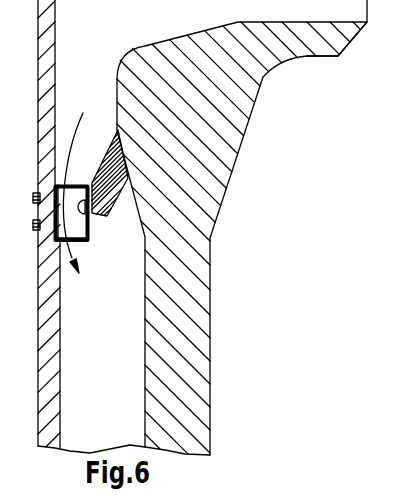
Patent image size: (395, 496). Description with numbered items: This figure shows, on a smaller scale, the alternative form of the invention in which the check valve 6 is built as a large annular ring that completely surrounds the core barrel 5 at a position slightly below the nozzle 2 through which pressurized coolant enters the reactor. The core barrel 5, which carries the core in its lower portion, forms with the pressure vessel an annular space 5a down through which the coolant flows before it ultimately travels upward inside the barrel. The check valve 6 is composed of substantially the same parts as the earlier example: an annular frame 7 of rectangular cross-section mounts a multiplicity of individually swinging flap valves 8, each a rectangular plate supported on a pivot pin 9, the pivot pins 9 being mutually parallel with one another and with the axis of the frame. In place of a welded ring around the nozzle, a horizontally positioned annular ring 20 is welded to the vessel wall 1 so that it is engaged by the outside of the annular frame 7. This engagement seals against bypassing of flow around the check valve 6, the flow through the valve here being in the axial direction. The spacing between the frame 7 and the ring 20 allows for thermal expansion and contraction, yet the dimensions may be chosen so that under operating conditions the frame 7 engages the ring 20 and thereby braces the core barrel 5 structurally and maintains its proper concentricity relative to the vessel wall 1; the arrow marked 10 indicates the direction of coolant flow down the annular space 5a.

The vessel wall 1 is at (203, 314).
The nozzle 2 is at (347, 30).
The core barrel 5 is at (50, 358).
The annular space 5a is at (124, 425).
The check valve 6 is at (82, 185).
The annular frame 7 is at (92, 238).
The flap valve 8 is at (75, 228).
The pivot pin 9 is at (92, 223).
The flow direction 10 is at (76, 128).
The annular ring 20 is at (112, 156).